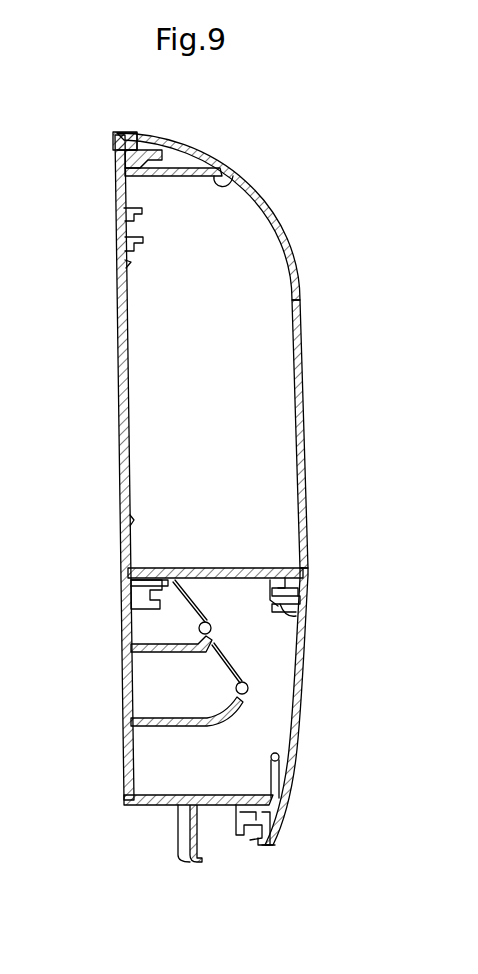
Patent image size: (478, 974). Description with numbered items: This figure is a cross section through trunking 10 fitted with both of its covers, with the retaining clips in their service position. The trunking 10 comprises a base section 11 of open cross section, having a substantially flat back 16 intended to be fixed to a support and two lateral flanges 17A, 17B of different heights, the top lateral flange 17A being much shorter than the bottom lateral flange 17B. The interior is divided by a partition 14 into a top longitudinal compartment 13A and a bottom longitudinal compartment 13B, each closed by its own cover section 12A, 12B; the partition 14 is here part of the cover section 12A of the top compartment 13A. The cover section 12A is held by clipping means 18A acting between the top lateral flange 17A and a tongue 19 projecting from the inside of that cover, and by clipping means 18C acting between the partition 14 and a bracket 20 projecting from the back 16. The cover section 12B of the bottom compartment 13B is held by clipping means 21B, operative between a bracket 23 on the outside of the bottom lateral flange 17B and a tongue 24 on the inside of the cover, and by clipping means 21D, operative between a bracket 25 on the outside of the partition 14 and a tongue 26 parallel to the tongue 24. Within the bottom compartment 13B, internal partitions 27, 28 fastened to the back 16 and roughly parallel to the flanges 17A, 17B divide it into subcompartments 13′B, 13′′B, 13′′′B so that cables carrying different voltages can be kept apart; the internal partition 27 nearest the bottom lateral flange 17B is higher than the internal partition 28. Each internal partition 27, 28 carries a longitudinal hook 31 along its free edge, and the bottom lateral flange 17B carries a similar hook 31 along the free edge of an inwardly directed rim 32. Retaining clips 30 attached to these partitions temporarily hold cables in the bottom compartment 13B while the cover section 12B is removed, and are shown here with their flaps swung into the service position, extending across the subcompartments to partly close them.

The trunking 10 is at (112, 823).
The base section 11 is at (116, 478).
The cover section 12A is at (294, 224).
The cover section 12B is at (312, 681).
The top longitudinal compartment 13A is at (268, 351).
The bottom longitudinal compartment 13B is at (278, 718).
The subcompartment 13′B is at (142, 760).
The subcompartment 13′′B is at (143, 685).
The subcompartment 13′′′B is at (140, 632).
The partition 14 is at (248, 568).
The back 16 is at (118, 325).
The top lateral flange 17A is at (132, 132).
The bottom lateral flange 17B is at (157, 816).
The clipping means 18A is at (156, 190).
The clipping means 18C is at (128, 581).
The tongue 19 is at (203, 178).
The bracket 20 is at (165, 580).
The clipping means 21B is at (267, 856).
The clipping means 21D is at (306, 577).
The bracket 23 is at (242, 840).
The tongue 24 is at (278, 830).
The bracket 25 is at (270, 600).
The tongue 26 is at (298, 612).
The internal partition 27 is at (183, 727).
The internal partition 28 is at (166, 653).
The retaining clip 30 is at (194, 578).
The longitudinal hook 31 is at (198, 628).
The inwardly directed rim 32 is at (282, 780).